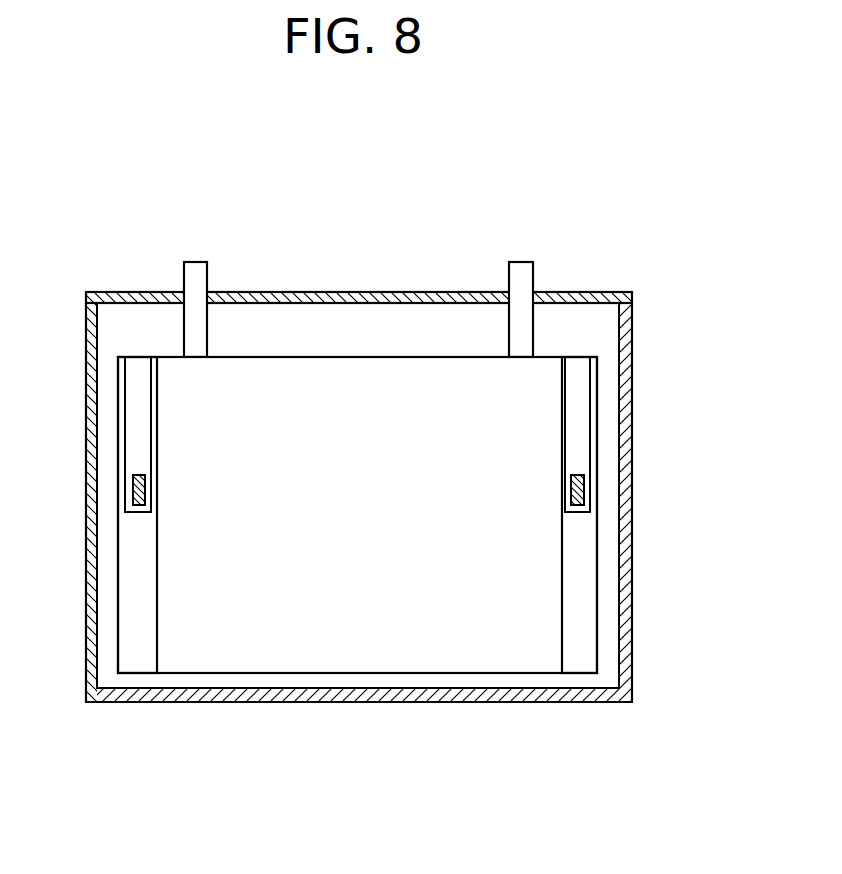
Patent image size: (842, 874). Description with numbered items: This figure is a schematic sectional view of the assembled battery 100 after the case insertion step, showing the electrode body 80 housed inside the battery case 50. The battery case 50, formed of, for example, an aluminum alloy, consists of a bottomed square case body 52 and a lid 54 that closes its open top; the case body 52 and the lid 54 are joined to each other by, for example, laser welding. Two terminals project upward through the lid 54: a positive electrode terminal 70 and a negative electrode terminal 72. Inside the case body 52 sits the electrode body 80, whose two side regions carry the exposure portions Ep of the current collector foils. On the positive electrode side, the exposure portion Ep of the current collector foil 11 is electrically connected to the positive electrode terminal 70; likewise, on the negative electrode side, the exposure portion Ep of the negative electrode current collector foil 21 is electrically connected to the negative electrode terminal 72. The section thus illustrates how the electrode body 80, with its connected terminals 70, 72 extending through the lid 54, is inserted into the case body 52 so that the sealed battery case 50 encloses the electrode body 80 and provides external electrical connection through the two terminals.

The battery 100 is at (676, 163).
The battery case 50 is at (710, 275).
The case body 52 is at (633, 322).
The lid 54 is at (633, 295).
The positive electrode terminal 70 is at (193, 275).
The negative electrode terminal 72 is at (522, 275).
The electrode body 80 is at (313, 385).
The current collector foil 11 is at (137, 657).
The negative electrode current collector foil 21 is at (580, 657).
The exposure portion Ep is at (143, 535).